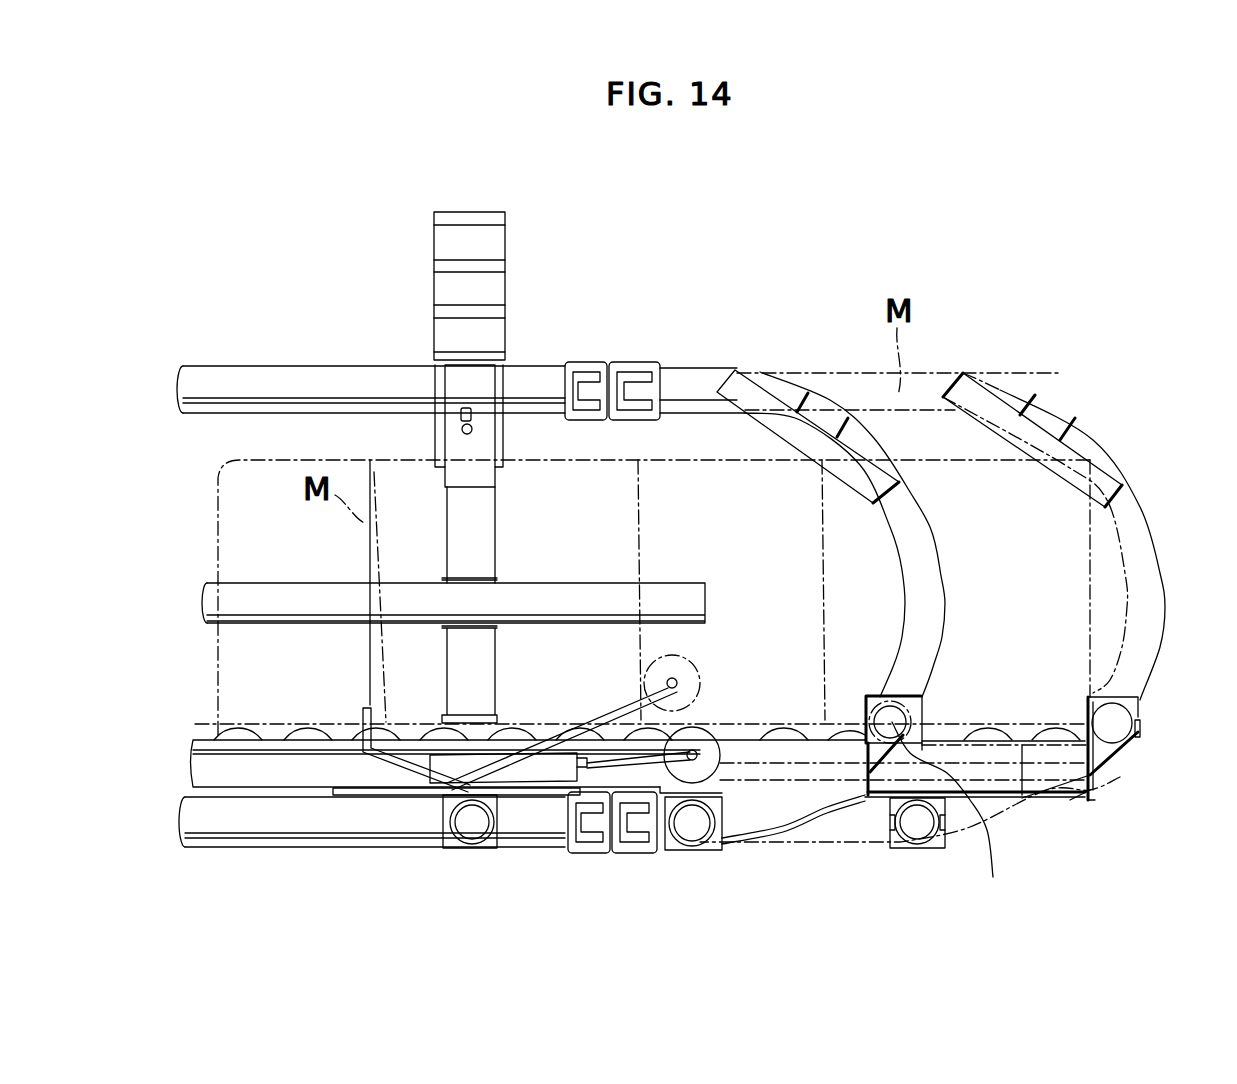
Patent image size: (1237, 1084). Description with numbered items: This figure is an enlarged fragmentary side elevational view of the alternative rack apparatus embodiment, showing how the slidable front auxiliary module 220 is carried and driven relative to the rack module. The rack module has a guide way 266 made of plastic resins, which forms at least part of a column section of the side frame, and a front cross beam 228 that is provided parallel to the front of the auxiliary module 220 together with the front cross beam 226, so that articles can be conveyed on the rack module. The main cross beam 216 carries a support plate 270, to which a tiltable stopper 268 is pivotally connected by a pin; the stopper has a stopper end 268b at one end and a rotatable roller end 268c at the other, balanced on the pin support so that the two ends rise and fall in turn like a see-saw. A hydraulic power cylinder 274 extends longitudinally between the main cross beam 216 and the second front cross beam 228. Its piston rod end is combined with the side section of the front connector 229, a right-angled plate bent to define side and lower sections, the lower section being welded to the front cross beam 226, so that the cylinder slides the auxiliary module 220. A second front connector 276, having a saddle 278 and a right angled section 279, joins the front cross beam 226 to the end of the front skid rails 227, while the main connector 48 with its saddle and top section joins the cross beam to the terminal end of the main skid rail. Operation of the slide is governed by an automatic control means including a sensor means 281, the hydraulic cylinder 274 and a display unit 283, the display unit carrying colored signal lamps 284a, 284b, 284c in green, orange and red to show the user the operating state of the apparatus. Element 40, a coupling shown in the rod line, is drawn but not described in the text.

The display unit 283 is at (487, 252).
The colored signal lamp 284a is at (495, 240).
The colored signal lamp 284b is at (495, 285).
The colored signal lamp 284c is at (495, 332).
The coupling 40 is at (614, 362).
The front auxiliary module 220 is at (720, 372).
The sensor means 281 is at (772, 382).
The guide way 266 is at (262, 586).
The tiltable stopper 268 is at (610, 708).
The stopper end 268b is at (356, 710).
The rotatable roller end 268c is at (702, 736).
The front skid rail 227 is at (835, 752).
The second front connector 276 is at (868, 693).
The saddle 278 is at (922, 710).
The support plate 270 is at (345, 800).
The hydraulic power cylinder 274 is at (430, 796).
The main connector 48 is at (442, 824).
The main cross beam 216 is at (472, 826).
The front cross beam 228 is at (692, 852).
The front connector 229 is at (733, 843).
The right angled section 279 is at (823, 822).
The front cross beam 226 is at (1075, 805).